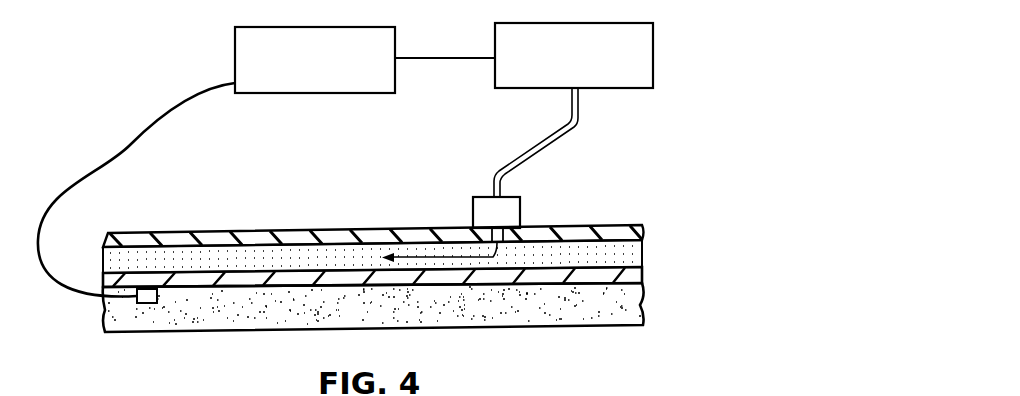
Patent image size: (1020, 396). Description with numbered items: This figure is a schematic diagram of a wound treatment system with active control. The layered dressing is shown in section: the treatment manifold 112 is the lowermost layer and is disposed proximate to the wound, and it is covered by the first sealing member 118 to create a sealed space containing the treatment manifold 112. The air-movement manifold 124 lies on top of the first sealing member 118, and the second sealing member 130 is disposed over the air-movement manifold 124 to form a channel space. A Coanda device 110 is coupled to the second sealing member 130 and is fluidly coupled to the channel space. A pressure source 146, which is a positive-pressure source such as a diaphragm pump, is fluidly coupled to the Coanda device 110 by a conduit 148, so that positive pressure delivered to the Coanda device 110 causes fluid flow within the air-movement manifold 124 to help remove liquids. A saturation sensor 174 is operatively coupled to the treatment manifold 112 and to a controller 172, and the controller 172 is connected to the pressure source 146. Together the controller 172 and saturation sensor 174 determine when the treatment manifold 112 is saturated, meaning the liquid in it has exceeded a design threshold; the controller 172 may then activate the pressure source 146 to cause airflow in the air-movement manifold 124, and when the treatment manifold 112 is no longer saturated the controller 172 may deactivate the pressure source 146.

The controller 172 is at (235, 43).
The pressure source 146 is at (653, 40).
The conduit 148 is at (537, 145).
The Coanda device 110 is at (520, 215).
The second sealing member 130 is at (645, 233).
The air-movement manifold 124 is at (645, 256).
The first sealing member 118 is at (645, 276).
The treatment manifold 112 is at (643, 316).
The saturation sensor 174 is at (145, 305).